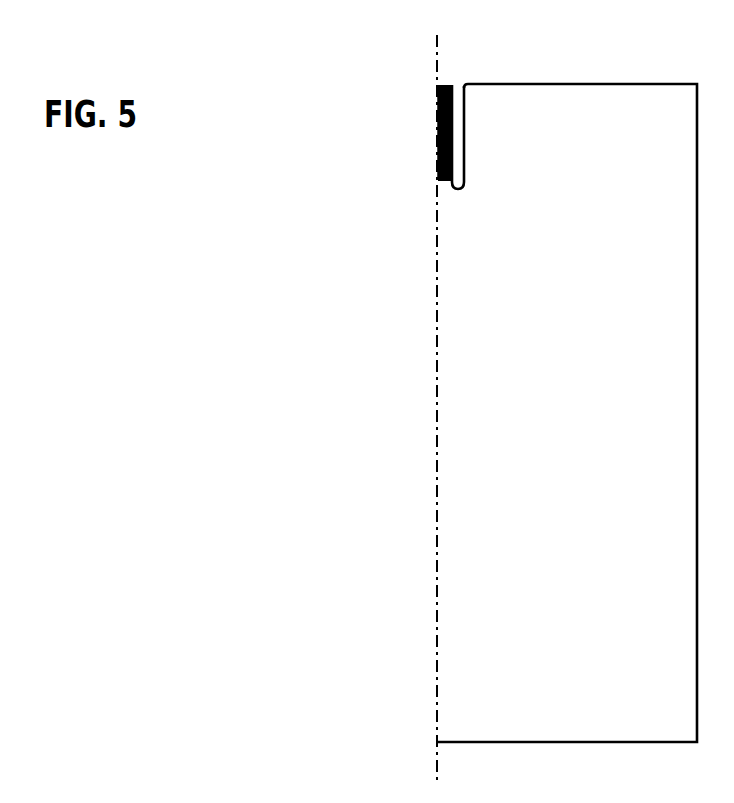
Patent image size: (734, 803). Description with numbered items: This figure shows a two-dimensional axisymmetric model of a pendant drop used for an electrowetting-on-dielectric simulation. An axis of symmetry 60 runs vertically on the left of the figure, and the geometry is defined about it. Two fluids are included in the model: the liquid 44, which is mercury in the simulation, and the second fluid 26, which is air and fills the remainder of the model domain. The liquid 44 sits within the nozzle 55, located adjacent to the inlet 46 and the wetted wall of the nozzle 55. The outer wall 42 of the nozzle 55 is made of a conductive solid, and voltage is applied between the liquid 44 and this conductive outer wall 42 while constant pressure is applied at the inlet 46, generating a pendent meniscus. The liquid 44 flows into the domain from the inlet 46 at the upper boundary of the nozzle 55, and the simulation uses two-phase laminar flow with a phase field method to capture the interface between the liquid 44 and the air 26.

The second fluid 26 is at (571, 318).
The outer wall 42 is at (467, 141).
The liquid 44 is at (440, 113).
The inlet 46 is at (443, 85).
The nozzle 55 is at (476, 118).
The axis of symmetry 60 is at (437, 327).